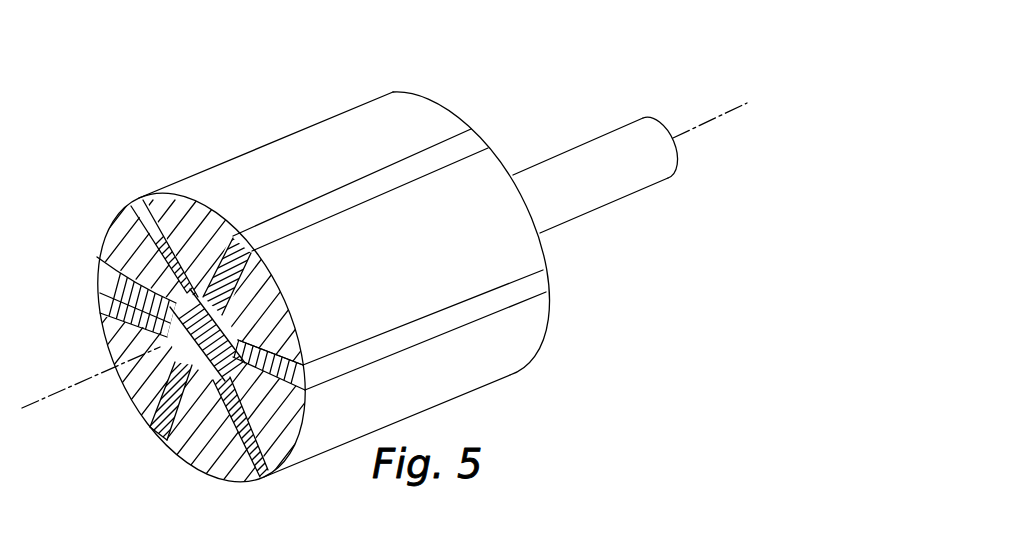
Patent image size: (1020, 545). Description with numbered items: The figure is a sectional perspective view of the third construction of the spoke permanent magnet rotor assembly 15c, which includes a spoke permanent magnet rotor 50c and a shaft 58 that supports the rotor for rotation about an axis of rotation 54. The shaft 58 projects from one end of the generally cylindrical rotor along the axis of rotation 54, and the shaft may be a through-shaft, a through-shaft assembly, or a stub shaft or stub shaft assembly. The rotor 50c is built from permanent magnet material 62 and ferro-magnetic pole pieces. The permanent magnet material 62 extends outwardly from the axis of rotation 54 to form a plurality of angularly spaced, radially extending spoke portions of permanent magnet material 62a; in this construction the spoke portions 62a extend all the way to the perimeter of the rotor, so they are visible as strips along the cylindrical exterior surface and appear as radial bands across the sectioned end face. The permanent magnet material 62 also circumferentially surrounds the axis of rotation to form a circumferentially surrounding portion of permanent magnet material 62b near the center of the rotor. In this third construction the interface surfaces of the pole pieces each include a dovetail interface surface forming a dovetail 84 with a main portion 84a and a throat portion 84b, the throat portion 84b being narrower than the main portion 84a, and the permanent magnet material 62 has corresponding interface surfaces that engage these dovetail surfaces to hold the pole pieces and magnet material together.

The spoke permanent magnet rotor assembly 15c is at (153, 130).
The spoke permanent magnet rotor 50c is at (397, 92).
The shaft 58 is at (628, 130).
The axis of rotation 54 is at (728, 110).
The permanent magnet material 62 is at (473, 147).
The spoke portions of permanent magnet material 62a is at (141, 206).
The circumferentially surrounding portion of permanent magnet material 62b is at (245, 325).
The dovetail 84 is at (198, 282).
The main portion 84a is at (303, 391).
The throat portion 84b is at (97, 259).